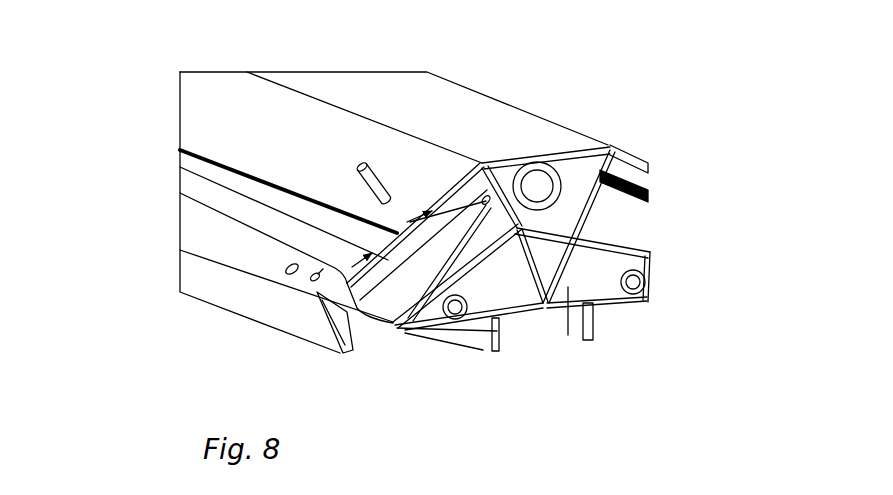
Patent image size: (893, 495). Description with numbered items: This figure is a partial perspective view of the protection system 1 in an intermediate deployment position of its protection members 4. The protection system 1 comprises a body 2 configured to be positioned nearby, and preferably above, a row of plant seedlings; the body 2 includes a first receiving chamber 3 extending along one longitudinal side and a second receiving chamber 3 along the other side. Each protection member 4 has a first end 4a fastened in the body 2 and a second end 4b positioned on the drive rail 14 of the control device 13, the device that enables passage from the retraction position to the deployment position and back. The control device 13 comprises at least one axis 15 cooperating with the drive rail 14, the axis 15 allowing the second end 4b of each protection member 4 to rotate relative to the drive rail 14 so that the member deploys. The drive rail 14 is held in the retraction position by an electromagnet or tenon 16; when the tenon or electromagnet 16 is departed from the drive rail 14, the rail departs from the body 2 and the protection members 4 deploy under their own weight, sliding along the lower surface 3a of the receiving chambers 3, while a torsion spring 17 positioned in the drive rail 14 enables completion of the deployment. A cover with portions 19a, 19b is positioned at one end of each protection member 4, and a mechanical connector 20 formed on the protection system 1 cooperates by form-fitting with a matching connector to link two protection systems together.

The protection system 1 is at (172, 404).
The body 2 is at (503, 130).
The receiving chamber 3 is at (625, 210).
The lower surface 3a is at (627, 240).
The protection member 4 is at (228, 203).
The first end 4a is at (407, 222).
The second end 4b is at (238, 225).
The control device 13 is at (212, 322).
The drive rail 14 is at (270, 310).
The axis 15 is at (296, 277).
The electromagnet or tenon 16 is at (360, 164).
The torsion spring 17 is at (317, 333).
The bracket 19a is at (357, 330).
The leg 19b is at (568, 337).
The mechanical connector 20 is at (648, 283).